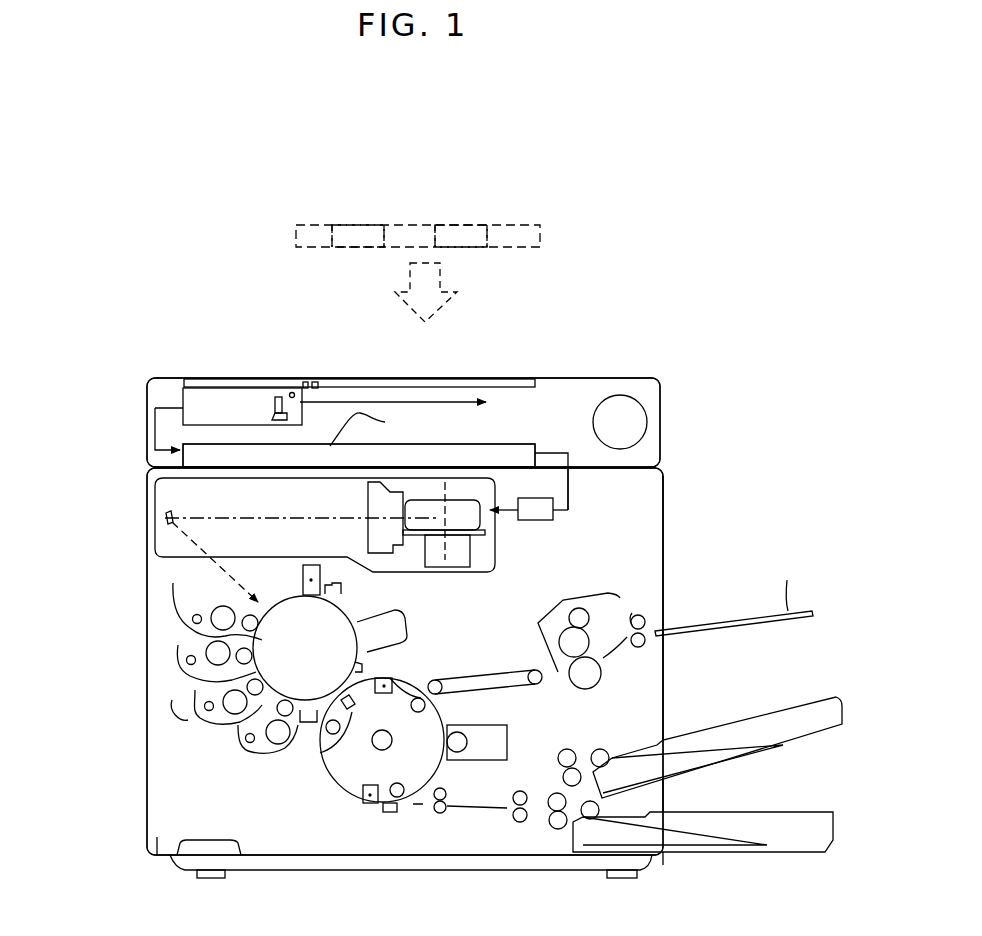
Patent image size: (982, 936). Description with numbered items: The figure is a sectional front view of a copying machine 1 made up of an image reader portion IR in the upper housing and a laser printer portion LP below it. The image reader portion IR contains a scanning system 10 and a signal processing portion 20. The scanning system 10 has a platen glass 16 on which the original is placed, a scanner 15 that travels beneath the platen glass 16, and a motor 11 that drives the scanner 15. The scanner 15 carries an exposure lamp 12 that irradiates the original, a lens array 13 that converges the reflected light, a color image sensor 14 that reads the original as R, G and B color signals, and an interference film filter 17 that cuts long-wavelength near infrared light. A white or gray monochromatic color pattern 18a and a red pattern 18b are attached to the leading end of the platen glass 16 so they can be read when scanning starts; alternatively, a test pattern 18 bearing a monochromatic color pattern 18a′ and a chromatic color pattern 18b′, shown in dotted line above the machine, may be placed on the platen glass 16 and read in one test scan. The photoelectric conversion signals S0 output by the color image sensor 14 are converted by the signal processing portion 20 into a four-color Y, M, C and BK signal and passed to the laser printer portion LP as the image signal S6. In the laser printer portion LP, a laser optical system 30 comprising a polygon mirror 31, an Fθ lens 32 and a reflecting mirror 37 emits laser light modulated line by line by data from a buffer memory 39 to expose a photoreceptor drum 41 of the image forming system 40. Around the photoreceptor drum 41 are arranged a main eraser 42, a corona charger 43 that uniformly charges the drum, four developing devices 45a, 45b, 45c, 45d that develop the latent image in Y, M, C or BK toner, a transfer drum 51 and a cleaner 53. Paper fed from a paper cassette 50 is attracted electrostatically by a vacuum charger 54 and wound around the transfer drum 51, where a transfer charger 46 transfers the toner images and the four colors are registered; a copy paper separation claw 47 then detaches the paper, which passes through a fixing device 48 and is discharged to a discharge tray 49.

The copying machine 1 is at (129, 326).
The image reader portion IR is at (128, 414).
The laser printer portion LP is at (128, 523).
The scanning system 10 is at (358, 434).
The motor 11 is at (647, 420).
The exposure lamp 12 is at (292, 392).
The lens array 13 is at (273, 402).
The color image sensor 14 is at (286, 420).
The scanner 15 is at (208, 388).
The platen glass 16 is at (463, 378).
The interference film filter 17 is at (375, 477).
The test pattern 18 is at (527, 237).
The monochromatic color pattern 18a is at (316, 383).
The red pattern 18b is at (305, 382).
The monochromatic color pattern 18a′ is at (462, 231).
The chromatic color pattern 18b′ is at (357, 233).
The signal processing portion 20 is at (183, 456).
The laser optical system 30 is at (320, 510).
The polygon mirror 31 is at (483, 522).
The Fθ lens 32 is at (388, 547).
The reflecting mirror 37 is at (170, 513).
The buffer memory 39 is at (553, 517).
The photoelectric conversion signals S0 is at (155, 408).
The image signal S6 is at (568, 495).
The image forming system 40 is at (498, 617).
The photoreceptor drum 41 is at (320, 661).
The main eraser 42 is at (342, 590).
The corona charger 43 is at (312, 565).
The developing device 45a is at (212, 602).
The developing device 45b is at (178, 672).
The developing device 45c is at (209, 717).
The developing device 45d is at (243, 760).
The transfer charger 46 is at (320, 753).
The copy paper separation claw 47 is at (413, 680).
The fixing device 48 is at (573, 597).
The discharge tray 49 is at (734, 594).
The paper cassette 50 is at (783, 752).
The transfer drum 51 is at (362, 800).
The cleaner 53 is at (407, 626).
The vacuum charger 54 is at (360, 787).